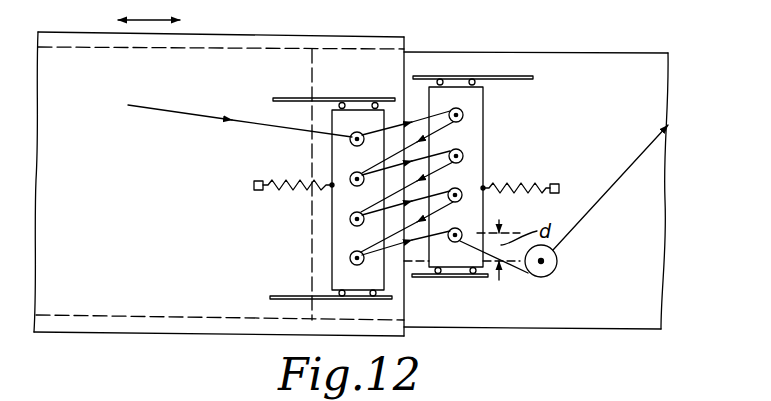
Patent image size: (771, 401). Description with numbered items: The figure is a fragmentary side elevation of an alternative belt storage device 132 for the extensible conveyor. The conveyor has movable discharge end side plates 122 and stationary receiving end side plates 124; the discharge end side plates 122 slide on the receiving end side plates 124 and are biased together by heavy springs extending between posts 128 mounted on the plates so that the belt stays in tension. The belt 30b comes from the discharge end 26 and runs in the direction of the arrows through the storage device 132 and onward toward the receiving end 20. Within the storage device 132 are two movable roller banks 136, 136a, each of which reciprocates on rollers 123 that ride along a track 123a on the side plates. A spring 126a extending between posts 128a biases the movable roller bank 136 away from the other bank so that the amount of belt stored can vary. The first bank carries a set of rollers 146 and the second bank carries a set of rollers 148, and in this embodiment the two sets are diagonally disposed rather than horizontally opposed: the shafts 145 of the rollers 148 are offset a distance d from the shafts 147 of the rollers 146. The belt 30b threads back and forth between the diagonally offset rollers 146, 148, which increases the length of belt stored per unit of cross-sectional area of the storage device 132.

The movable discharge end side plate 122 is at (238, 32).
The stationary receiving end side plate 124 is at (582, 53).
The roller 123 is at (425, 305).
The track 123a is at (513, 303).
The spring 126a is at (566, 165).
The post 128 is at (484, 188).
The post 128a is at (258, 187).
The belt storage device 132 is at (421, 48).
The movable roller bank 136 is at (325, 86).
The second movable roller bank 136a is at (448, 67).
The set of rollers 146 is at (351, 260).
The shaft 147 is at (352, 264).
The set of rollers 148 is at (460, 150).
The shaft 145 is at (455, 243).
The belt 30b is at (175, 113).
The discharge end 26 is at (100, 107).
The receiving end 20 is at (716, 118).